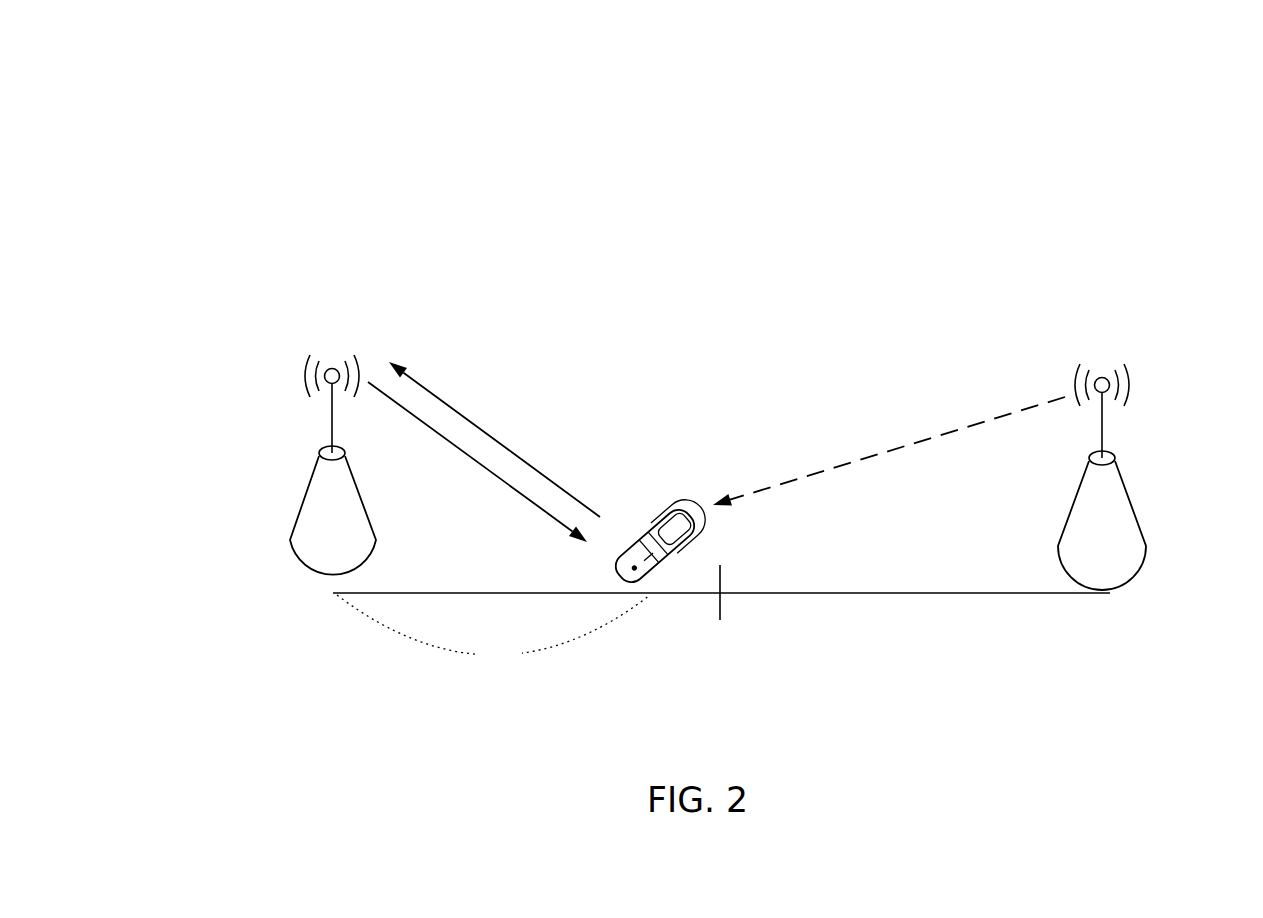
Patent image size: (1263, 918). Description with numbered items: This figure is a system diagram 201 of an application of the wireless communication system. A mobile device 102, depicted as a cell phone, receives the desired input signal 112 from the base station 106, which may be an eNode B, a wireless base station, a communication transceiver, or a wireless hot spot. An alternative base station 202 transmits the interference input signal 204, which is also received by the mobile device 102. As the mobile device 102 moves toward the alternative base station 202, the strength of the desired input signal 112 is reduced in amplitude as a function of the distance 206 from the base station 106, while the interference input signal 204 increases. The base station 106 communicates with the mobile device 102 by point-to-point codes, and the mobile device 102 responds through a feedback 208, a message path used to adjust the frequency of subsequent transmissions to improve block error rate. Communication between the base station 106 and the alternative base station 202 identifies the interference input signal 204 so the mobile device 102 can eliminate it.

The wireless communication system 201 is at (250, 95).
The base station 106 is at (352, 518).
The alternative base station 202 is at (1103, 548).
The mobile device 102 is at (643, 567).
The desired input signal 112 is at (493, 475).
The feedback 208 is at (533, 468).
The interference input signal 204 is at (813, 470).
The distance 206 is at (408, 645).